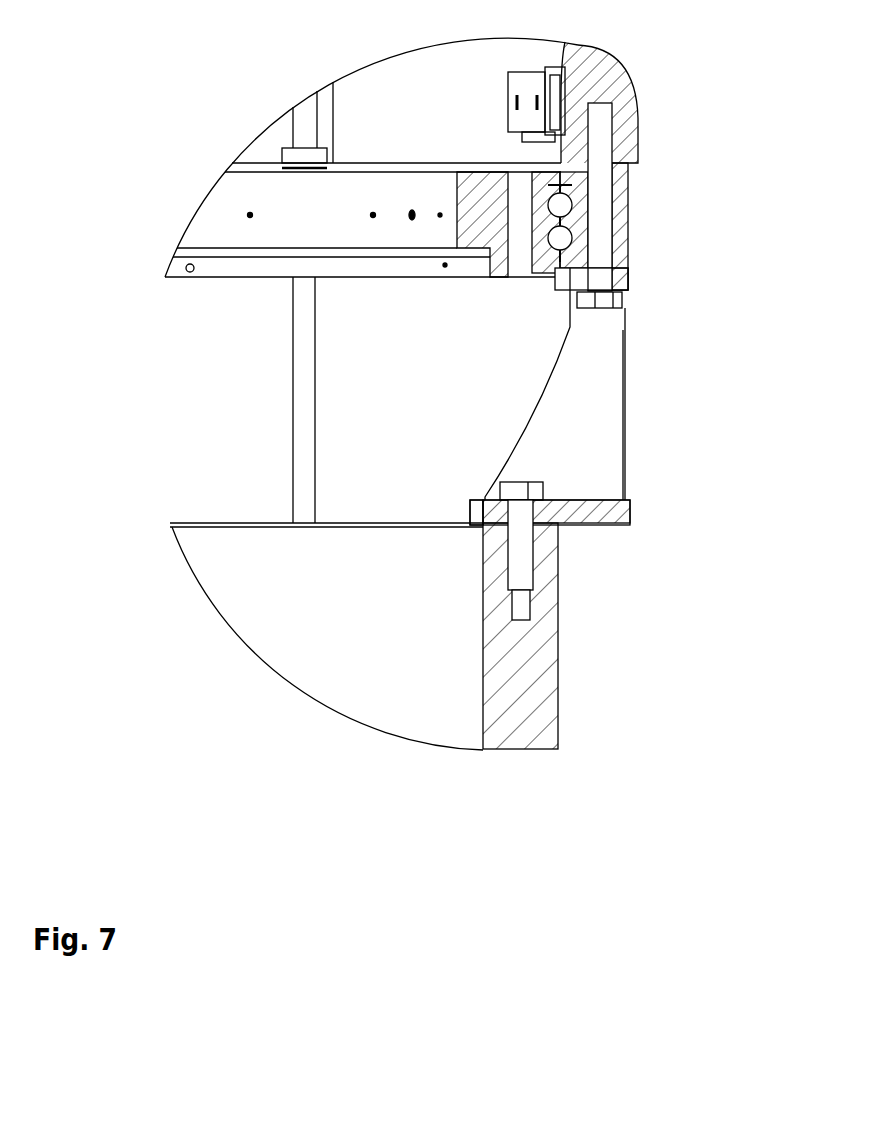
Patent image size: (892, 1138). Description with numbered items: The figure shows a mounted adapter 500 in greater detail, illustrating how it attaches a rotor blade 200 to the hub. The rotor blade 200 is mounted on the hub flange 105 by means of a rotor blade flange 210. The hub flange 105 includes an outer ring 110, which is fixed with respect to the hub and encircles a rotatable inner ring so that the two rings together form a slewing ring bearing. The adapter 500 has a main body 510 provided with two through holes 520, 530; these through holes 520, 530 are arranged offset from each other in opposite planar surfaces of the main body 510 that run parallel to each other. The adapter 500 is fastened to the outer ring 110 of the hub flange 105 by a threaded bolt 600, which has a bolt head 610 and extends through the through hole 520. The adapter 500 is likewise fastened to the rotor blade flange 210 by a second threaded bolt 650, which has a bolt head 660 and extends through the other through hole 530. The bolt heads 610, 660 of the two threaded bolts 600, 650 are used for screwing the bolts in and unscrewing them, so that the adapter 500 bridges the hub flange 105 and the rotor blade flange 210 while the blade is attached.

The hub flange 105 is at (338, 266).
The outer ring 110 is at (620, 188).
The rotor blade 200 is at (353, 688).
The rotor blade flange 210 is at (497, 518).
The adapter 500 is at (590, 400).
The main body 510 is at (610, 450).
The through hole 520 is at (600, 278).
The through hole 530 is at (520, 513).
The threaded bolt 600 is at (600, 125).
The bolt head 610 is at (600, 310).
The threaded bolt 650 is at (522, 563).
The bolt head 660 is at (540, 483).